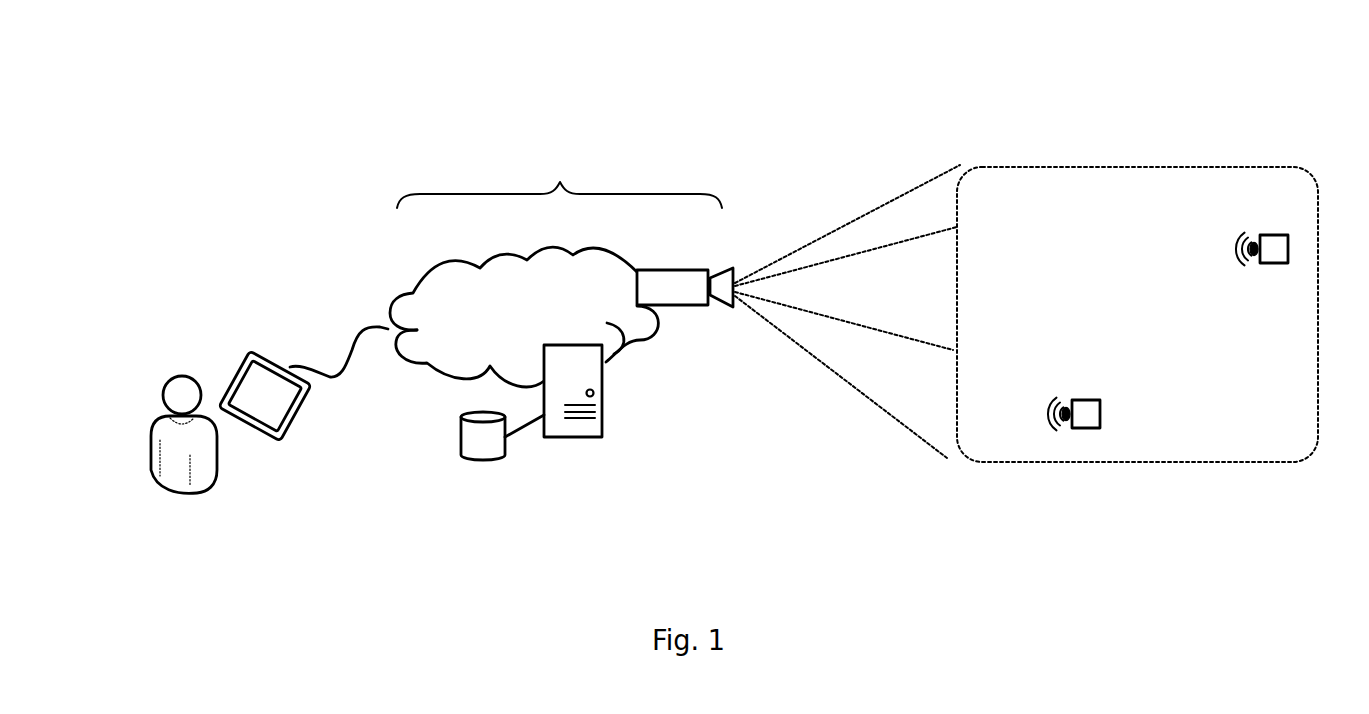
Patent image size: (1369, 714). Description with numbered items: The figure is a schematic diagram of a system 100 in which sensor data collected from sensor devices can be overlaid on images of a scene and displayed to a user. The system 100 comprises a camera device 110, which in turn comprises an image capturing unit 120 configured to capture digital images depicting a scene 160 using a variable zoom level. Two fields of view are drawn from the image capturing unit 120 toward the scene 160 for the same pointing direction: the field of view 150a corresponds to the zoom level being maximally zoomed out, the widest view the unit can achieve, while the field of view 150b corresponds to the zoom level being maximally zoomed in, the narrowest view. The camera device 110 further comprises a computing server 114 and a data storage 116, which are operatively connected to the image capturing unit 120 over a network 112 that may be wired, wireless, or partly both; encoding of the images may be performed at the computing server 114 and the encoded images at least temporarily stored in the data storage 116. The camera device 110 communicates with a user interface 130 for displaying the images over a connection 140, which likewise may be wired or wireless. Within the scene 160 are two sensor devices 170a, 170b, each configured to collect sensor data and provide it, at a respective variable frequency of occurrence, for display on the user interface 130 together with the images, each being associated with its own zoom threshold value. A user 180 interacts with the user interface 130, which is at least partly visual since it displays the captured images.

The system 100 is at (293, 88).
The camera device 110 is at (559, 175).
The network 112 is at (543, 331).
The computing server 114 is at (575, 428).
The data storage 116 is at (483, 455).
The image capturing unit 120 is at (682, 270).
The user interface 130 is at (255, 437).
The connection 140 is at (347, 340).
The field of view 150a is at (790, 347).
The field of view 150b is at (877, 332).
The scene 160 is at (1137, 167).
The sensor device 170a is at (1273, 263).
The sensor device 170b is at (1080, 400).
The user 180 is at (193, 370).